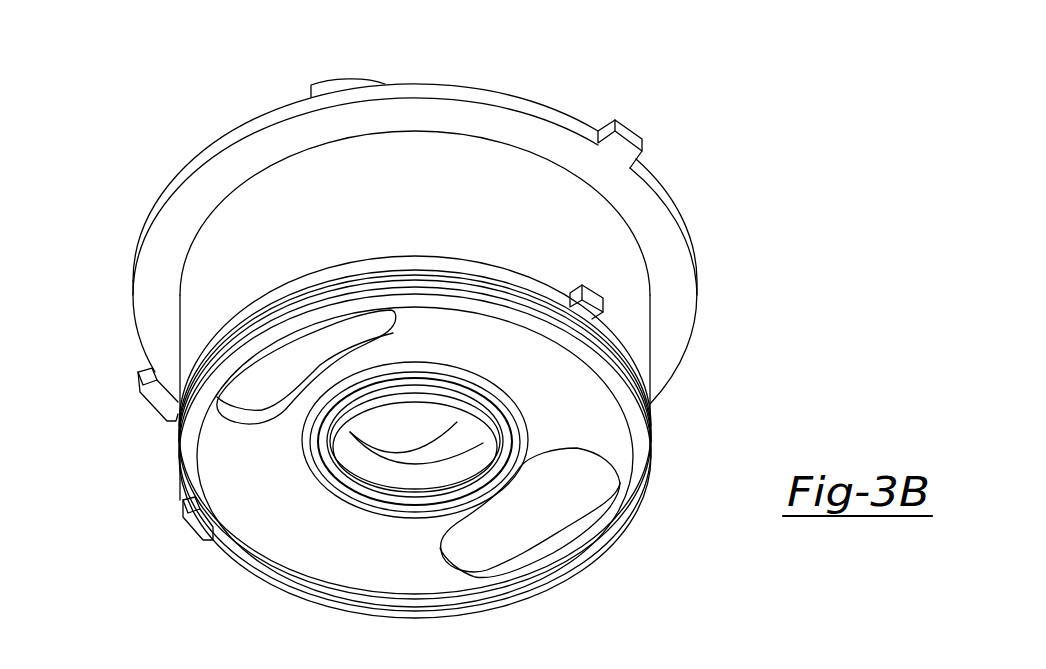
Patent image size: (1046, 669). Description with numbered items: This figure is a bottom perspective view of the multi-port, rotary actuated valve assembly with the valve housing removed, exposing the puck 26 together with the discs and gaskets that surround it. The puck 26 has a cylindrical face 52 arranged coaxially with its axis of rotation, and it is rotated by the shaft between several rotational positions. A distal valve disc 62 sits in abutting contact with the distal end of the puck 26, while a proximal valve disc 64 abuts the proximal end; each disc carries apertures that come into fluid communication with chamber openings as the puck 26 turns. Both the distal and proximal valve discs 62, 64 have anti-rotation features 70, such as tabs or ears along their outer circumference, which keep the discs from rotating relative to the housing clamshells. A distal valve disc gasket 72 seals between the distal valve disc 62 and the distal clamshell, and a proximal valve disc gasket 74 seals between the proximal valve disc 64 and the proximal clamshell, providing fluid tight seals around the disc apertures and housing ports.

The puck 26 is at (662, 312).
The cylindrical face 52 is at (188, 308).
The distal valve disc 62 is at (451, 248).
The proximal valve disc 64 is at (679, 194).
The anti-rotation features 70 is at (630, 130).
The distal valve disc gasket 72 is at (447, 386).
The proximal valve disc gasket 74 is at (260, 96).